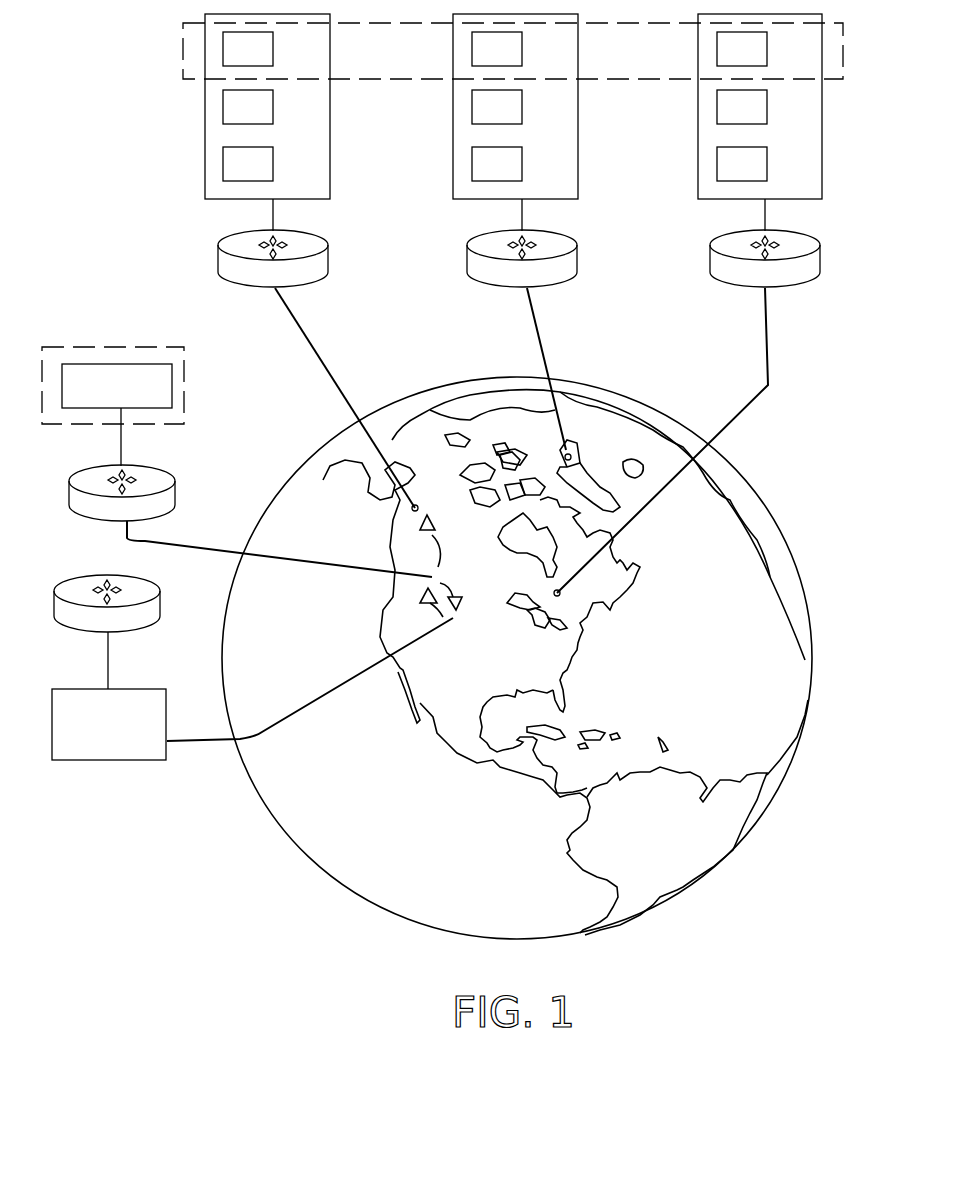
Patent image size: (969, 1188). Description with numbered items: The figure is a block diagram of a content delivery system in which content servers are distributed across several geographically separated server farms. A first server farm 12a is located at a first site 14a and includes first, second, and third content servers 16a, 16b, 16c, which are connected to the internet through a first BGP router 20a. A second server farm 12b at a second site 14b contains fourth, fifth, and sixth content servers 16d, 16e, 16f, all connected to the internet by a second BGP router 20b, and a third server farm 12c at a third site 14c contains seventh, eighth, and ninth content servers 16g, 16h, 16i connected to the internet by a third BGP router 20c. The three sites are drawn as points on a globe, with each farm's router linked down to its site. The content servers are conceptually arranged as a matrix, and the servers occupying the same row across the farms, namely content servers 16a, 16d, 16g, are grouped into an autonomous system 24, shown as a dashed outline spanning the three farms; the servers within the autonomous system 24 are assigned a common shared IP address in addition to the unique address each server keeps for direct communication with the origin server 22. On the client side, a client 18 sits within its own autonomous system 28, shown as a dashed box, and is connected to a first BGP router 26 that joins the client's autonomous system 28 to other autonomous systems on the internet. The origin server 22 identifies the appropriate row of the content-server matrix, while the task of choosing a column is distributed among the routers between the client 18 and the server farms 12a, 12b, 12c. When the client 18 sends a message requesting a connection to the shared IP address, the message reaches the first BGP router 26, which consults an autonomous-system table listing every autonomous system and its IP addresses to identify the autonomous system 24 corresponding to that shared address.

The first server farm 12a is at (330, 153).
The second server farm 12b is at (578, 153).
The third server farm 12c is at (822, 153).
The first site 14a is at (405, 514).
The second site 14b is at (588, 445).
The third site 14c is at (560, 593).
The first content server 16a is at (273, 52).
The second content server 16b is at (273, 110).
The third content server 16c is at (273, 167).
The fourth content server 16d is at (522, 52).
The fifth content server 16e is at (522, 110).
The sixth content server 16f is at (522, 167).
The seventh content server 16g is at (767, 52).
The eighth content server 16h is at (767, 110).
The ninth content server 16i is at (767, 167).
The client 18 is at (86, 364).
The first BGP router 20a is at (327, 266).
The second BGP router 20b is at (576, 266).
The third BGP router 20c is at (819, 250).
The origin server 22 is at (137, 689).
The autonomous system 24 is at (843, 50).
The first BGP router 26 is at (149, 465).
The client's autonomous system 28 is at (129, 342).